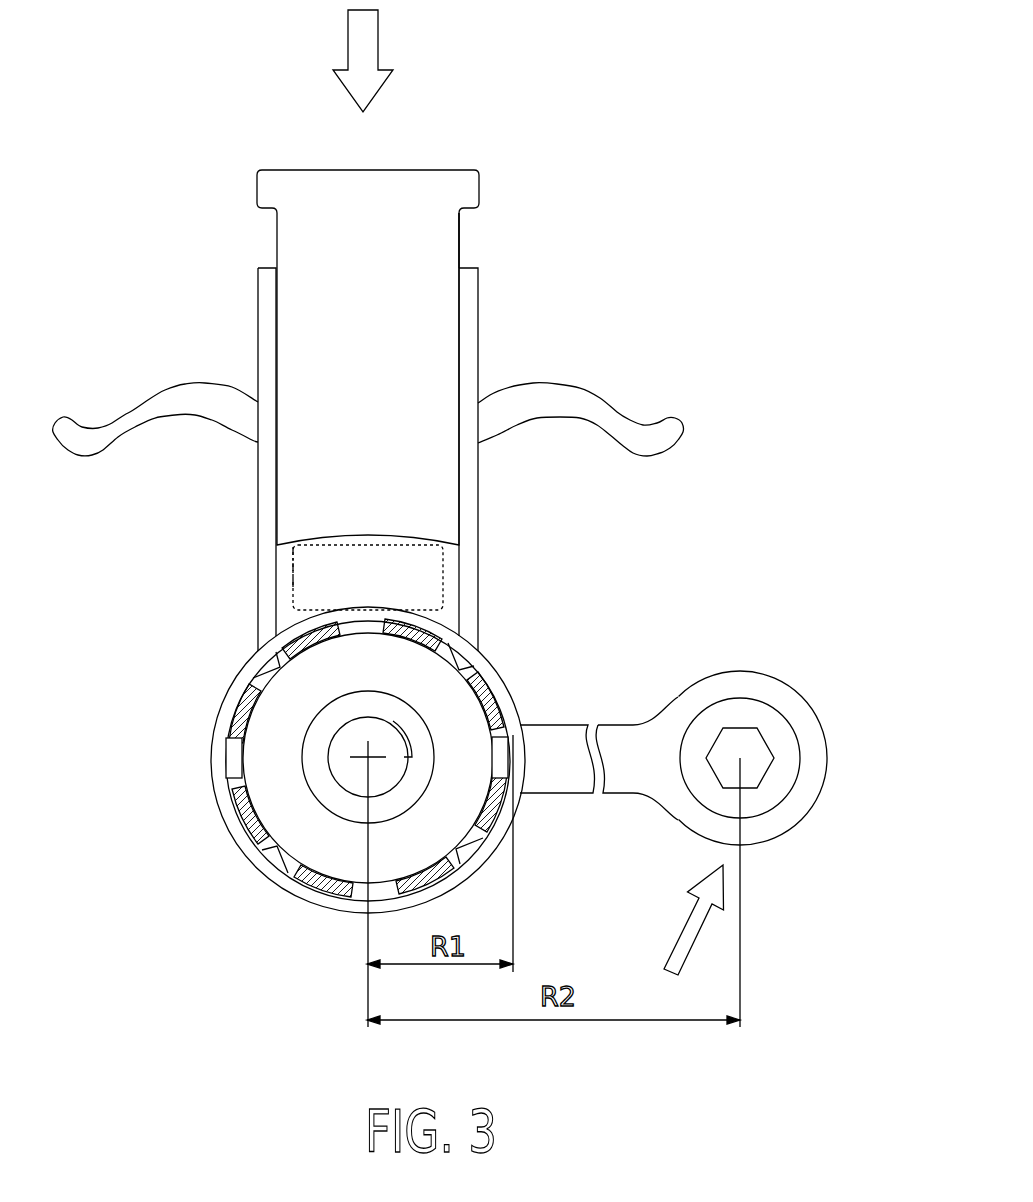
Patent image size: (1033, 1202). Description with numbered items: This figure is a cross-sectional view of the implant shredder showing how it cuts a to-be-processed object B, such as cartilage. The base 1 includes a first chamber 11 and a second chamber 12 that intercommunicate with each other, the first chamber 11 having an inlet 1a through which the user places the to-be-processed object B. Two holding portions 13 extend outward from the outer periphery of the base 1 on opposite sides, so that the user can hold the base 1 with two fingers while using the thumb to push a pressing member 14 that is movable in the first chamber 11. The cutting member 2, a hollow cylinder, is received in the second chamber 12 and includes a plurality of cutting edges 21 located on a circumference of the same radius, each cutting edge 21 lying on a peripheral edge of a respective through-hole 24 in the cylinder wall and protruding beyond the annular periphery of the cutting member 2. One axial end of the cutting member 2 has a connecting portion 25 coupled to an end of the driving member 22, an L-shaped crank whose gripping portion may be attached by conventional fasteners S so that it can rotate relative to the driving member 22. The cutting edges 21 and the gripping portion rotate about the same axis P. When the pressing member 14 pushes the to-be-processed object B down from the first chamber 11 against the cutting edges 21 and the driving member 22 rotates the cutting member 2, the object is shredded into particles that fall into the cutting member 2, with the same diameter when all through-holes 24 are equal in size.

The base 1 is at (495, 328).
The inlet 1a is at (462, 268).
The first chamber 11 is at (257, 575).
The second chamber 12 is at (222, 667).
The holding portion 13 is at (143, 402).
The pressing member 14 is at (430, 178).
The cutting member 2 is at (457, 814).
The cutting edges 21 is at (223, 743).
The driving member 22 is at (558, 735).
The through-holes 24 is at (235, 770).
The connecting portion 25 is at (347, 807).
The axis P is at (368, 757).
The to-be-processed object B is at (460, 593).
The fasteners S is at (740, 728).